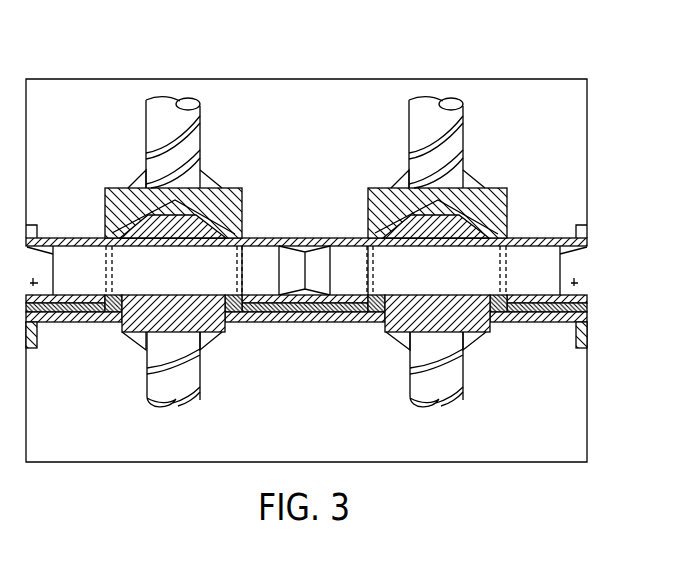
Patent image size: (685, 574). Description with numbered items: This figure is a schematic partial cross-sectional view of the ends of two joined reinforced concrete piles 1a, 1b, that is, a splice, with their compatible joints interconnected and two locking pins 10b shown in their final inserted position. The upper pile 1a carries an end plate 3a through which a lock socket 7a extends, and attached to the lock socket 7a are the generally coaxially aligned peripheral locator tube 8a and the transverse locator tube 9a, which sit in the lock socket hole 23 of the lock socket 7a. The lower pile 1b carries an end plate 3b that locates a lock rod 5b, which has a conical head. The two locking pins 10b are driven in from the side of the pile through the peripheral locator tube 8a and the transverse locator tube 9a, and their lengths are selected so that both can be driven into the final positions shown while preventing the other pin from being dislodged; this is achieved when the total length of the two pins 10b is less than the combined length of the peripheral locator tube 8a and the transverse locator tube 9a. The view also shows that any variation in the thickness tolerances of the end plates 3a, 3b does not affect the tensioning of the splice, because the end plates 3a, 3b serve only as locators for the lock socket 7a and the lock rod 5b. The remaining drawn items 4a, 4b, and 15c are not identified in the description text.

The reinforced concrete pile 1a is at (498, 79).
The reinforced concrete pile 1b is at (481, 463).
The end plate 3a is at (283, 324).
The end plate 3b is at (317, 326).
The upper coil spring 4a is at (201, 127).
The lower coil spring 4b is at (200, 399).
The lock rod 5b is at (124, 333).
The lock socket 7a is at (222, 188).
The peripheral locator tube 8a is at (78, 236).
The transverse locator tube 9a is at (278, 240).
The locking pin 10b is at (72, 278).
The shaft section 15c is at (306, 270).
The lock socket hole 23 is at (243, 247).